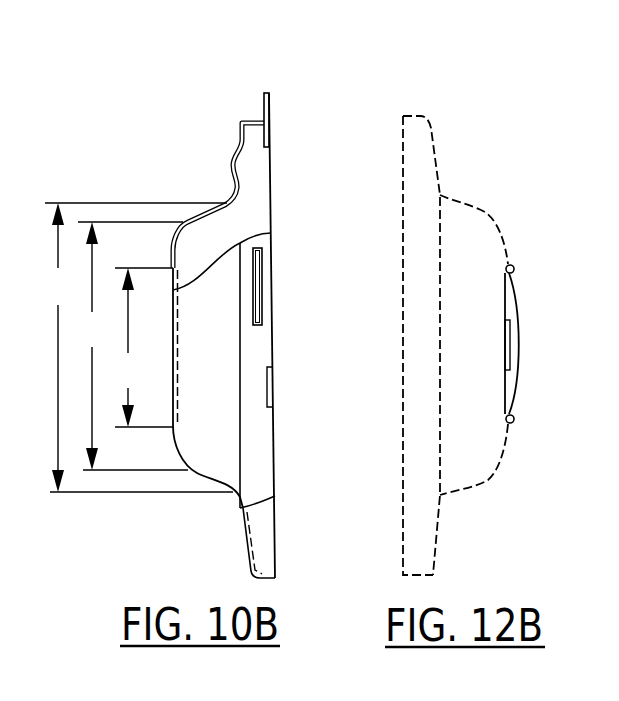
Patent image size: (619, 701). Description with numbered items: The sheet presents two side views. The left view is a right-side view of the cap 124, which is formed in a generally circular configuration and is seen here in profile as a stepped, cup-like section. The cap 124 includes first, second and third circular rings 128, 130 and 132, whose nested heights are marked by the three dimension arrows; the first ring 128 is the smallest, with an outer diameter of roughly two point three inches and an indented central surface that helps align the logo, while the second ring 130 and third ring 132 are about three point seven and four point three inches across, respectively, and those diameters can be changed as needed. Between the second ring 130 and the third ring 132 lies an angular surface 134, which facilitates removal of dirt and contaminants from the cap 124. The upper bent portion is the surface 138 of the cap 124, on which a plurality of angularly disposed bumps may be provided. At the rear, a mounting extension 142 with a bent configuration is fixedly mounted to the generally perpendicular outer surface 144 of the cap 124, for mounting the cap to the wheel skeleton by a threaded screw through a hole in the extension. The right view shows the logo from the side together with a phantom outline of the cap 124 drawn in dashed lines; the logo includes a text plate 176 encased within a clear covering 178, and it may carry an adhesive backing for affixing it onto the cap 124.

In FIG. 10B, the cap 124 is at (90, 168).
In FIG. 12B, the cap 124 is at (422, 518).
In FIG. 10B, the first circular ring 128 is at (142, 347).
In FIG. 10B, the second circular ring 130 is at (132, 346).
In FIG. 10B, the third circular ring 132 is at (136, 347).
In FIG. 10B, the angular surface 134 is at (204, 497).
In FIG. 10B, the surface 138 is at (224, 125).
In FIG. 10B, the mounting extension 142 is at (270, 292).
In FIG. 10B, the outer surface 144 is at (250, 100).
In FIG. 12B, the text plate 176 is at (530, 336).
In FIG. 12B, the clear covering 178 is at (512, 383).